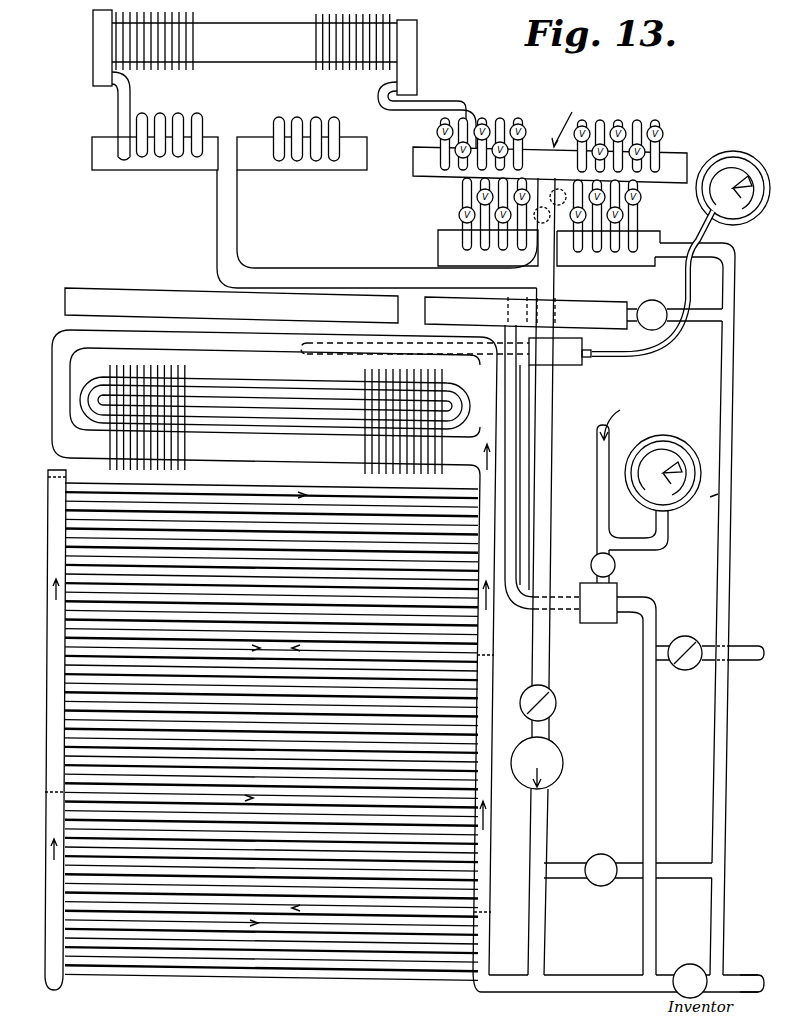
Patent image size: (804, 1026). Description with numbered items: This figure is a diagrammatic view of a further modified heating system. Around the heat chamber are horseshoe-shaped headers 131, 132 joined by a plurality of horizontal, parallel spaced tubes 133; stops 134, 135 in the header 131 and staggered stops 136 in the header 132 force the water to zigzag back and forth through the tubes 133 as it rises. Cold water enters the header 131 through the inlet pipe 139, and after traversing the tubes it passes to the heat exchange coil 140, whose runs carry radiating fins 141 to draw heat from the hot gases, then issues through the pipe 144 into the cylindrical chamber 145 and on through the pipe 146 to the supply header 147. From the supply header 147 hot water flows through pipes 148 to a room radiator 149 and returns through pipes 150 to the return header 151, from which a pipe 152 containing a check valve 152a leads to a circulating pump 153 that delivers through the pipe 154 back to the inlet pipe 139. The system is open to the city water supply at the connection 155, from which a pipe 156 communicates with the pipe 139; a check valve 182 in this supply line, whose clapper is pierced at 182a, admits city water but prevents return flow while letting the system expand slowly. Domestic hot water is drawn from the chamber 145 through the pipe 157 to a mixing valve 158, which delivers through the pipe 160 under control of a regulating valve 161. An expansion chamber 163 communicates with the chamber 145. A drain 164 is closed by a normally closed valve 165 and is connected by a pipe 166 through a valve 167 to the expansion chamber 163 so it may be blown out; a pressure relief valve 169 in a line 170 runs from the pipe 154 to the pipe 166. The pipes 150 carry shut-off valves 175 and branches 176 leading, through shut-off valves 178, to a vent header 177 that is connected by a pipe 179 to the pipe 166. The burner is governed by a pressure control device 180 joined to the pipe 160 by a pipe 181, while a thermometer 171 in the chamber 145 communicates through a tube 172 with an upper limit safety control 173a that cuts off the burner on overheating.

The header 131 is at (490, 697).
The header 132 is at (48, 704).
The pipes or tubes 133 is at (150, 935).
The stops 134 is at (480, 912).
The stops 135 is at (485, 655).
The stops 136 is at (45, 792).
The inlet pipe 139 is at (497, 968).
The heat exchange coil 140 is at (300, 386).
The radiating fins 141 is at (185, 375).
The pipe 144 is at (55, 396).
The cylindrical chamber 145 is at (316, 350).
The pipe 146 is at (297, 275).
The supply header 147 is at (111, 162).
The pipes 148 is at (118, 104).
The room radiator 149 is at (102, 46).
The pipes 150 is at (420, 110).
The return header 151 is at (672, 160).
The pipe 152 is at (545, 463).
The check valve 152a is at (556, 702).
The circulating pump 153 is at (564, 765).
The pipe 154 is at (542, 818).
The city water supply connection 155 is at (752, 648).
The pipe 156 is at (654, 745).
The pipe 157 is at (505, 376).
The mixing valve 158 is at (617, 596).
The domestic hot water pipe 160 is at (595, 509).
The regulating valve 161 is at (590, 562).
The expansion chamber 163 is at (155, 292).
The drain 164 is at (727, 975).
The valve 165 is at (680, 965).
The pipe 166 is at (730, 490).
The valve 167 is at (652, 300).
The pressure relief valve 169 is at (592, 857).
The line 170 is at (680, 868).
The fluid thermometer or thermostatic element 171 is at (574, 370).
The tube 172 is at (672, 342).
The upper limit safety control 173a is at (755, 215).
The shut-off valves 175 is at (437, 130).
The branches 176 is at (468, 186).
The vent header 177 is at (437, 252).
The shut-off valves 178 is at (459, 215).
The pipe 179 is at (670, 247).
The pressure control device 180 is at (690, 438).
The pipe 181 is at (667, 530).
The check valve 182 is at (690, 637).
The pierced clapper opening 182a is at (685, 670).